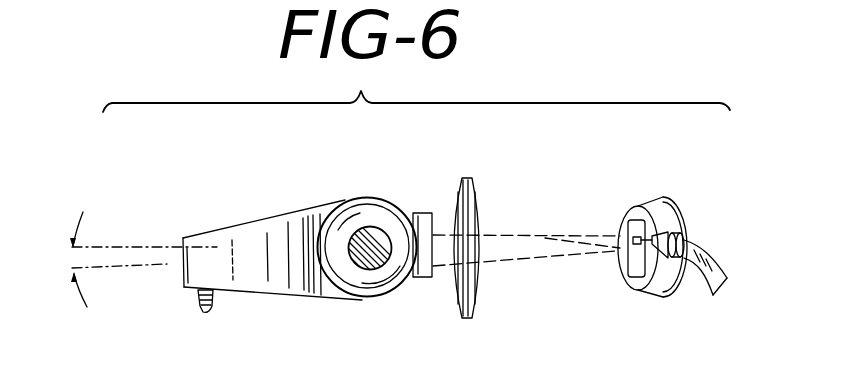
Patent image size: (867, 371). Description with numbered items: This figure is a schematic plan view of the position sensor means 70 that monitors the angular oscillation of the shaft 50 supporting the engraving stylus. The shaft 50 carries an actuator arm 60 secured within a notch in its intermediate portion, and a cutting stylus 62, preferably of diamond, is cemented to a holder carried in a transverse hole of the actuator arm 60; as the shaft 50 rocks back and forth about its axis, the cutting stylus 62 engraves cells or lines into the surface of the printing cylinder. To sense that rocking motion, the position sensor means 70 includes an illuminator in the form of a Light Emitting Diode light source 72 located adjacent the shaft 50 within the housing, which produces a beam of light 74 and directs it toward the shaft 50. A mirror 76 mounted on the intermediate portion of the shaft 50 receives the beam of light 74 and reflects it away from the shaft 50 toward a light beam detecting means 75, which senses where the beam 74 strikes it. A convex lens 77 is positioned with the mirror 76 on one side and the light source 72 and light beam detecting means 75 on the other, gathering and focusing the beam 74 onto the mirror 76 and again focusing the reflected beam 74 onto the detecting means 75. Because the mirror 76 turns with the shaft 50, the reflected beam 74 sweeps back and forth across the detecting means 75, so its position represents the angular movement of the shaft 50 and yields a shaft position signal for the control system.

The shaft 50 is at (363, 309).
The actuator arm 60 is at (257, 232).
The cutting stylus 62 is at (202, 308).
The position sensor means 70 is at (652, 253).
The light source 72 is at (683, 230).
The beam of light 74 is at (542, 238).
The light beam detecting means 75 is at (690, 201).
The mirror 76 is at (418, 213).
The convex lens 77 is at (473, 200).